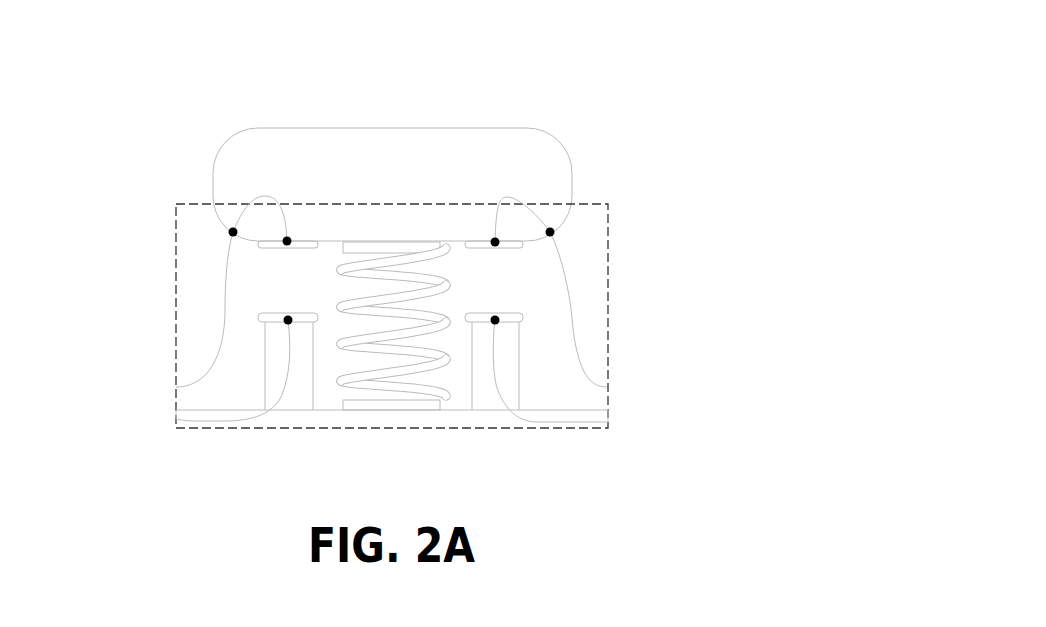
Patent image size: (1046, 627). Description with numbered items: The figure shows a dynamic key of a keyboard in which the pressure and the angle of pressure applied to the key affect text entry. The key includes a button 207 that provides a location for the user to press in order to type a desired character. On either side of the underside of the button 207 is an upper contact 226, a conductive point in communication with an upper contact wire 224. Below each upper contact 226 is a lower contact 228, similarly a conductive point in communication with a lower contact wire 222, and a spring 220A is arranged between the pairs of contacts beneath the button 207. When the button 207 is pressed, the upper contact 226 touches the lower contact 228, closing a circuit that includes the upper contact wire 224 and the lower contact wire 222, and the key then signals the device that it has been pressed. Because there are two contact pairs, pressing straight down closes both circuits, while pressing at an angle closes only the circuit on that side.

The button 207 is at (463, 127).
The spring 220A is at (479, 367).
The lower contact wire 222 is at (324, 351).
The upper contact wire 224 is at (323, 309).
The upper contact 226 is at (392, 200).
The lower contact 228 is at (353, 324).